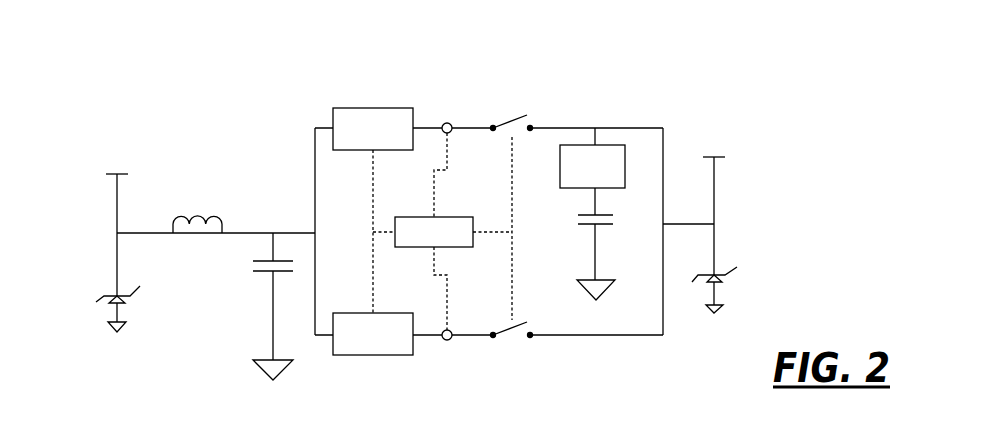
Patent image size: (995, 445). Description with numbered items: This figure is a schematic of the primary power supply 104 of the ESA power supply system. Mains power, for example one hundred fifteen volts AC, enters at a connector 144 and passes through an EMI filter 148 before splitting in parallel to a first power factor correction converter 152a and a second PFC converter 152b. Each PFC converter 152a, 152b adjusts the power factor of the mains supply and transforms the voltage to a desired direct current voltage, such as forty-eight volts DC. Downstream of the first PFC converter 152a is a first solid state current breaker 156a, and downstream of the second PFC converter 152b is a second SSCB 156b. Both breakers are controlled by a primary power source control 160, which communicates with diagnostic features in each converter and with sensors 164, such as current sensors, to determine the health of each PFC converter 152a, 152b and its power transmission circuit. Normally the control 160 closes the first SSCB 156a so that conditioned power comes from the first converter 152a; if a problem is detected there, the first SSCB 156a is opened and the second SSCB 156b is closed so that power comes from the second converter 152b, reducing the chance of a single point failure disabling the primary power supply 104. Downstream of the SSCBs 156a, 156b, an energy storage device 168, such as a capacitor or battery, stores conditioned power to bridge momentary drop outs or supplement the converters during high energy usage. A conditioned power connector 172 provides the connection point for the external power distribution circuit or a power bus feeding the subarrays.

The primary power supply 104 is at (168, 115).
The connector 144 is at (115, 177).
The EMI filter 148 is at (248, 207).
The first power factor correction (PFC) converter 152a is at (375, 107).
The second PFC converter 152b is at (373, 355).
The first solid state current breaker (SSCB) 156a is at (515, 120).
The second SSCB 156b is at (512, 327).
The primary power source control 160 is at (422, 217).
The sensors 164 is at (443, 123).
The energy storage device 168 is at (568, 187).
The conditioned power connector 172 is at (715, 165).